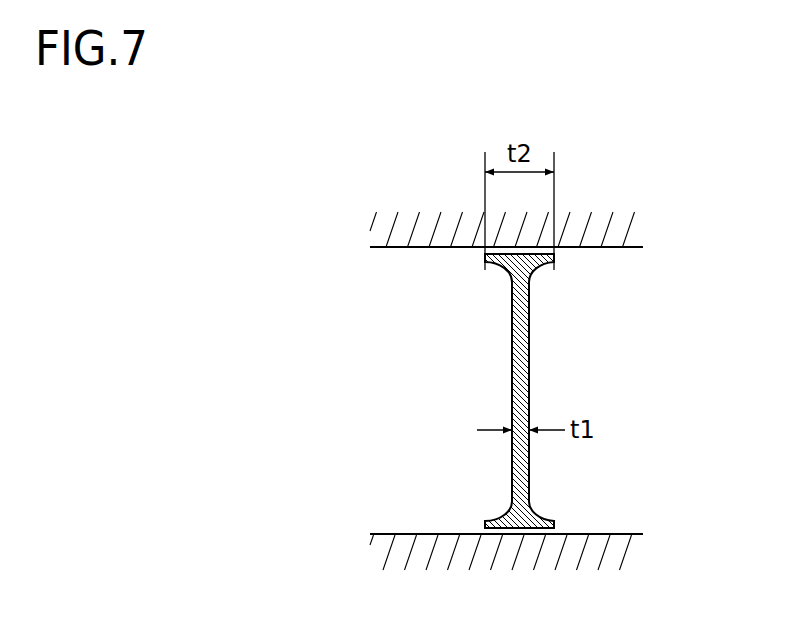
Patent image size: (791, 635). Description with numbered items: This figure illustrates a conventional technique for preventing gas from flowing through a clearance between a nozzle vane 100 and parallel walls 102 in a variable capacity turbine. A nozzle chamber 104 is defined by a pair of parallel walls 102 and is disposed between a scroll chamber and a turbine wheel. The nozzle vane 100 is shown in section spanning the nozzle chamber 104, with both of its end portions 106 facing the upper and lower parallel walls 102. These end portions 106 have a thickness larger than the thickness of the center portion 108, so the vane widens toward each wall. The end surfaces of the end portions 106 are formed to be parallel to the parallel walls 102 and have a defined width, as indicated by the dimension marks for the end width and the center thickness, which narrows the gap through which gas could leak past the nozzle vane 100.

The nozzle vane 100 is at (495, 392).
The parallel walls 102 is at (617, 248).
The nozzle chamber 104 is at (470, 375).
The end portions 106 is at (537, 276).
The center portion 108 is at (529, 390).